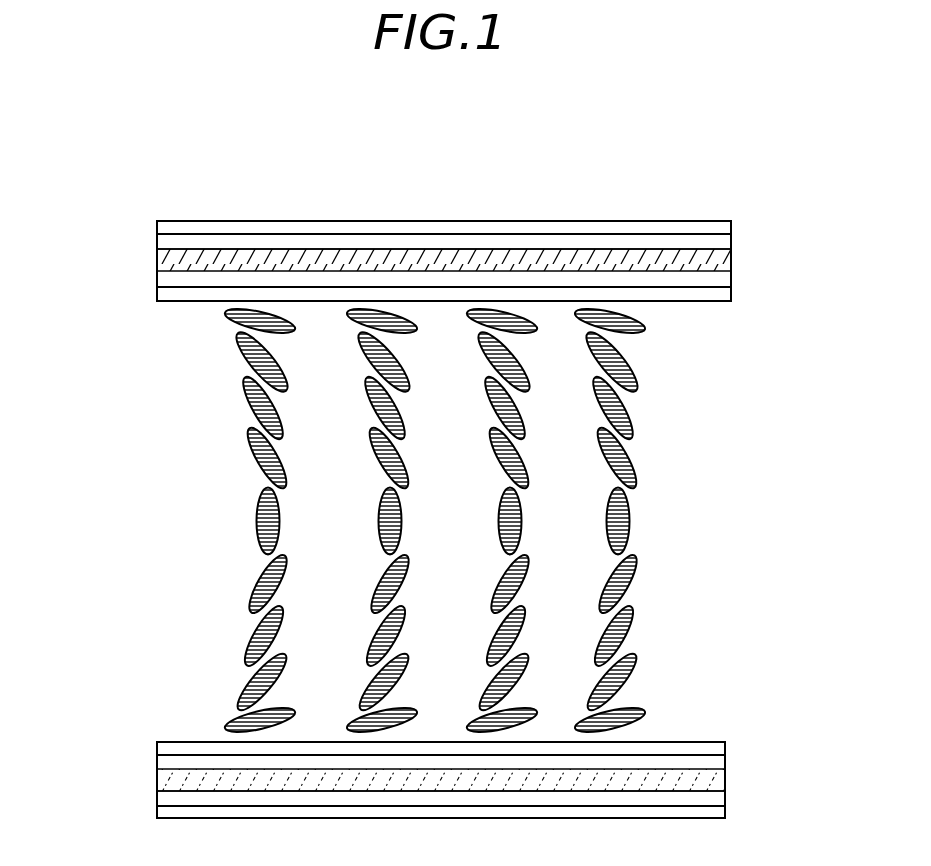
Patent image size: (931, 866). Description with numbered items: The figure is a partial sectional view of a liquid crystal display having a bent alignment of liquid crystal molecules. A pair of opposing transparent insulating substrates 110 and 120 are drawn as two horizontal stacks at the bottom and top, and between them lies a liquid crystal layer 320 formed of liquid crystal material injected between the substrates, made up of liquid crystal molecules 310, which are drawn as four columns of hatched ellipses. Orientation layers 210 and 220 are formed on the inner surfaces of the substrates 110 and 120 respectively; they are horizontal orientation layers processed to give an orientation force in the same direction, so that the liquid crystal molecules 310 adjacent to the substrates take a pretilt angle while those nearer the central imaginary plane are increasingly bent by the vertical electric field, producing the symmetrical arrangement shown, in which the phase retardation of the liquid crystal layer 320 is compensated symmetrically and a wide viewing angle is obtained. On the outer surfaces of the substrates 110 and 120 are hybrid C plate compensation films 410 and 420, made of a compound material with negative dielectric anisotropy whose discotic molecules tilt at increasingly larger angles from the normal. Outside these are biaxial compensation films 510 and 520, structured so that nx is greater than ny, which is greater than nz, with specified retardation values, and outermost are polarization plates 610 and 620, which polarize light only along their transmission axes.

The transparent insulating substrate 110 is at (725, 762).
The transparent insulating substrate 120 is at (731, 268).
The orientation layer 210 is at (725, 742).
The orientation layer 220 is at (731, 301).
The liquid crystal molecules 310 is at (257, 519).
The liquid crystal layer 320 is at (492, 522).
The hybrid C plate compensation film 410 is at (157, 773).
The hybrid C plate compensation film 420 is at (157, 258).
The biaxial compensation film 510 is at (157, 798).
The biaxial compensation film 520 is at (157, 243).
The polarization plate 610 is at (157, 815).
The polarization plate 620 is at (157, 222).